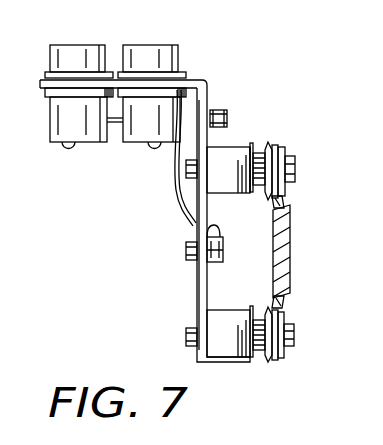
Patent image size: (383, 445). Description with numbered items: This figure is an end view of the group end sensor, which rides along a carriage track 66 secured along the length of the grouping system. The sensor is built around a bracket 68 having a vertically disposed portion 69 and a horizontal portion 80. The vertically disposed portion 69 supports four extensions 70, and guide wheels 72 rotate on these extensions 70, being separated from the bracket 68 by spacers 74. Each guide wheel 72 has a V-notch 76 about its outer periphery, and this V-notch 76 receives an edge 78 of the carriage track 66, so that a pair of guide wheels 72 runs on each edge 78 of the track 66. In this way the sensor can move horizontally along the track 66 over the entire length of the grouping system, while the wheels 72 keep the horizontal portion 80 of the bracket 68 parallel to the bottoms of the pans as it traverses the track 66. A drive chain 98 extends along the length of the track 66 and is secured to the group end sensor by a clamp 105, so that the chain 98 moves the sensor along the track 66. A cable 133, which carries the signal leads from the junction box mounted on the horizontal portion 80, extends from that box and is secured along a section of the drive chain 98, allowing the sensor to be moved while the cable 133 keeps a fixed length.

The carriage track 66 is at (291, 248).
The bracket 68 is at (208, 95).
The vertically disposed portion 69 is at (197, 290).
The extensions 70 is at (184, 171).
The guide wheels 72 is at (296, 156).
The spacers 74 is at (223, 182).
The V-notch 76 is at (276, 144).
The edge 78 is at (286, 203).
The horizontal portion 80 is at (193, 80).
The drive chain 98 is at (228, 118).
The clamp 105 is at (225, 255).
The cable 133 is at (186, 215).